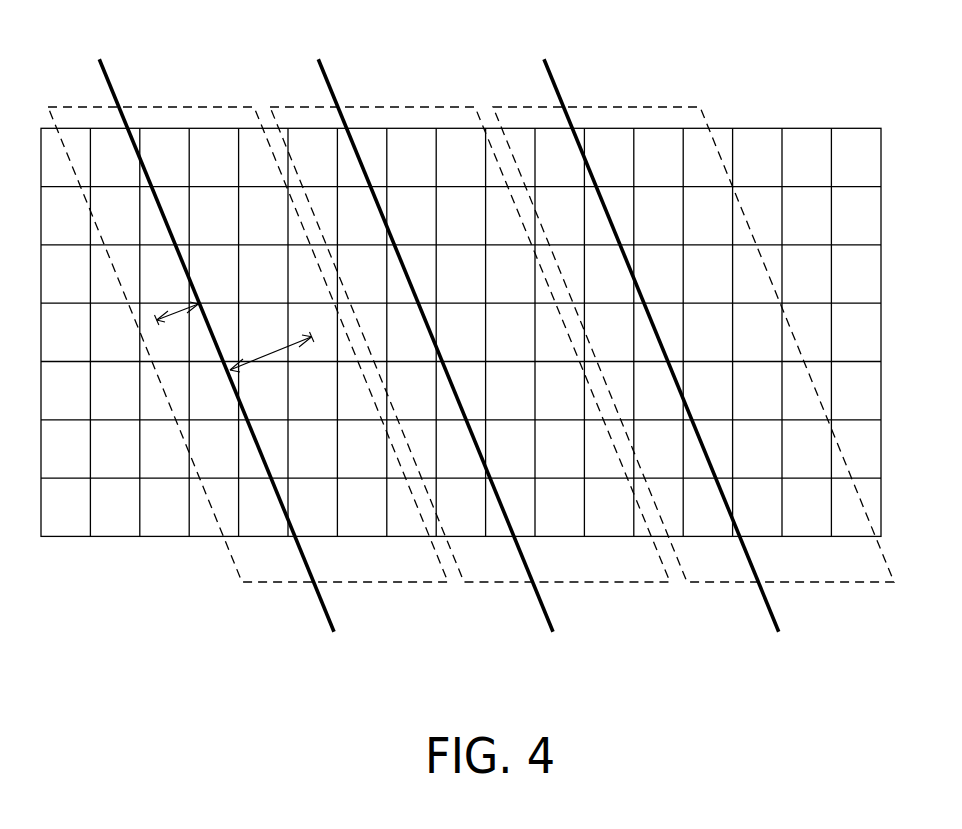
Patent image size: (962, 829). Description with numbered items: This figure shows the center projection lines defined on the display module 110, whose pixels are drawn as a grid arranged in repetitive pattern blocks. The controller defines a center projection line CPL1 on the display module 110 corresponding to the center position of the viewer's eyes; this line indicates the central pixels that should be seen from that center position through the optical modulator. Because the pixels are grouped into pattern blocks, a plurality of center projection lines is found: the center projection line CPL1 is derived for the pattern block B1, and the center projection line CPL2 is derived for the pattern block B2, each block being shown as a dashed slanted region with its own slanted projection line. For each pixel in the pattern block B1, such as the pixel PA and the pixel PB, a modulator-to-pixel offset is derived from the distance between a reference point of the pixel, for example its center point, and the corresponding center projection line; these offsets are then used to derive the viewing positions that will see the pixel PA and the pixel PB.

The display module 110 is at (860, 128).
The center projection line CPL1 is at (107, 78).
The center projection line CPL2 is at (323, 78).
The pattern block B1 is at (193, 107).
The pattern block B2 is at (412, 107).
The pixel PA is at (177, 330).
The pixel PB is at (277, 339).